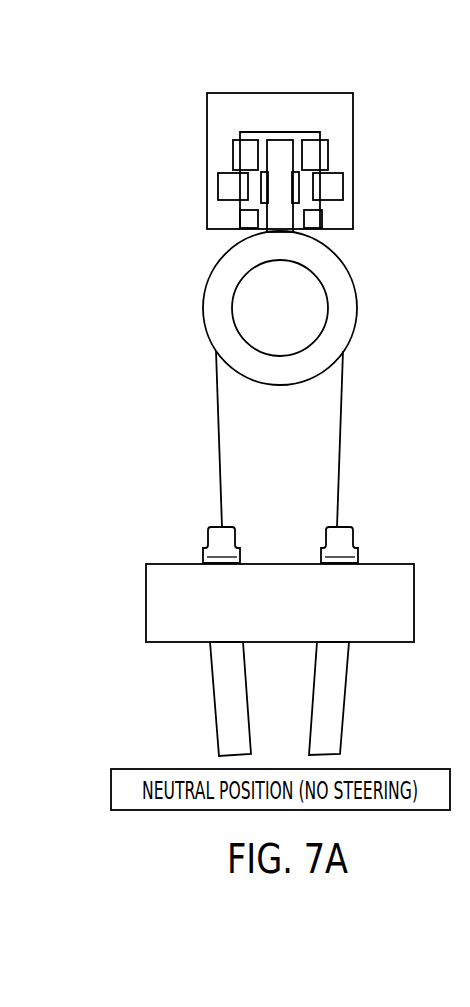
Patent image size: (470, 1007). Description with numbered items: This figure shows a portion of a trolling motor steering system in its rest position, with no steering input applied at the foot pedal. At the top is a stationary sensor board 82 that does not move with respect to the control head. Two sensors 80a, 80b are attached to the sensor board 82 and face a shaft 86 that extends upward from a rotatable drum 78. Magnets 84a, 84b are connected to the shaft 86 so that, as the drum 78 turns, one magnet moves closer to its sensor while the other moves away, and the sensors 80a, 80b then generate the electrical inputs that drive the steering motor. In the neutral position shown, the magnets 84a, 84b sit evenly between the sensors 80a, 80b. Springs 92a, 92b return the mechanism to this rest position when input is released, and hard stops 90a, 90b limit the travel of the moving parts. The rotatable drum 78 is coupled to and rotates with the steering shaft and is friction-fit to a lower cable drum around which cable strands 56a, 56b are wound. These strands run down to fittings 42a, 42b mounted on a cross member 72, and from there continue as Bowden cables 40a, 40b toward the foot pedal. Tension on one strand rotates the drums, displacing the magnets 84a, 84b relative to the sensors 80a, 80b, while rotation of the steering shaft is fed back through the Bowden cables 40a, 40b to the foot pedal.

The sensor board 82 is at (290, 100).
The shaft 86 is at (280, 150).
The magnet 84a is at (298, 190).
The magnet 84b is at (262, 187).
The spring 92a is at (320, 155).
The spring 92b is at (240, 153).
The sensor 80a is at (332, 190).
The sensor 80b is at (227, 188).
The hard stop 90a is at (312, 218).
The hard stop 90b is at (250, 218).
The rotatable drum 78 is at (343, 300).
The cable strand 56a is at (342, 440).
The cable strand 56b is at (218, 436).
The fitting 42a is at (343, 542).
The fitting 42b is at (217, 545).
The crossbar 72 is at (289, 612).
The Bowden cable 40a is at (333, 697).
The Bowden cable 40b is at (228, 698).